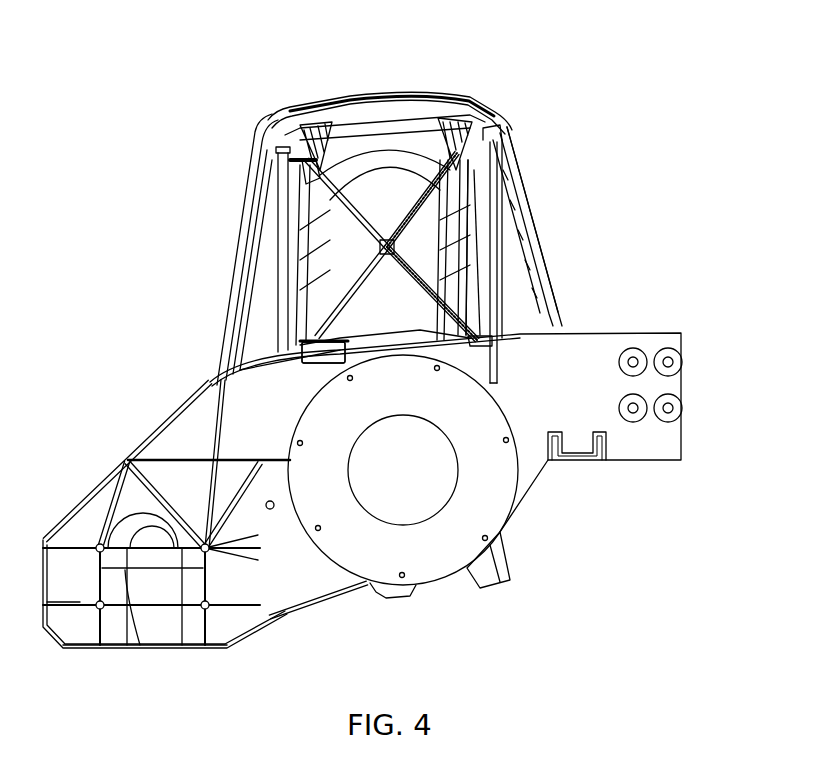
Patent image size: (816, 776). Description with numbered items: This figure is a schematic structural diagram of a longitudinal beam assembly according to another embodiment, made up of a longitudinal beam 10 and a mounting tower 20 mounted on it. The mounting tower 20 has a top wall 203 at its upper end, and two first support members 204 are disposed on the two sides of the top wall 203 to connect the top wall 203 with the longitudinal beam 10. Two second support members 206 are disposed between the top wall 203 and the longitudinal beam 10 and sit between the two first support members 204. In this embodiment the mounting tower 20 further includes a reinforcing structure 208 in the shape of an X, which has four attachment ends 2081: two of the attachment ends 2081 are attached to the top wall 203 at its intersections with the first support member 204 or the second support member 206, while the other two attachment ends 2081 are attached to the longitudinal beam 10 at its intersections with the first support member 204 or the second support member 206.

The longitudinal beam 10 is at (640, 440).
The mounting tower 20 is at (422, 211).
The top wall 203 is at (420, 95).
The first support member 204 is at (538, 248).
The second support member 206 is at (468, 292).
The reinforcing structure 208 is at (430, 202).
The attachment end 2081 is at (313, 333).